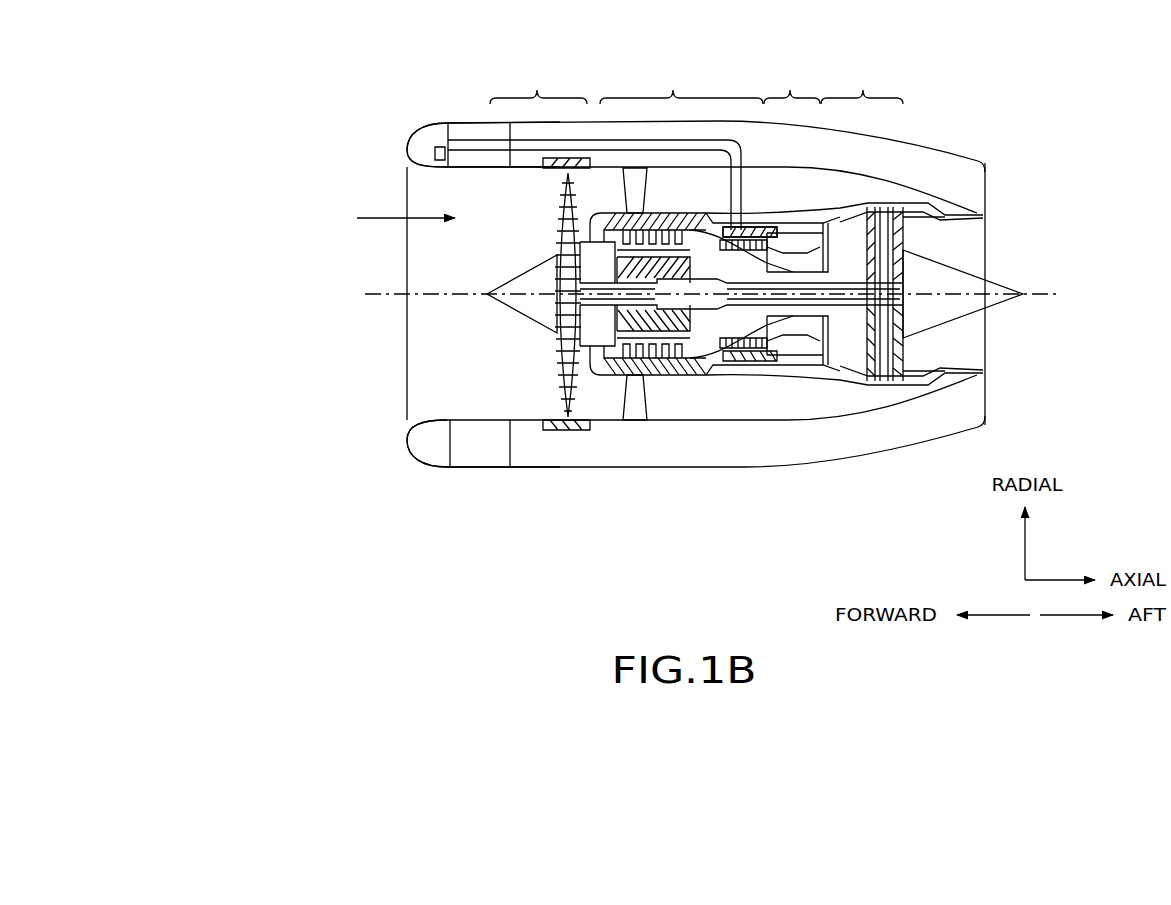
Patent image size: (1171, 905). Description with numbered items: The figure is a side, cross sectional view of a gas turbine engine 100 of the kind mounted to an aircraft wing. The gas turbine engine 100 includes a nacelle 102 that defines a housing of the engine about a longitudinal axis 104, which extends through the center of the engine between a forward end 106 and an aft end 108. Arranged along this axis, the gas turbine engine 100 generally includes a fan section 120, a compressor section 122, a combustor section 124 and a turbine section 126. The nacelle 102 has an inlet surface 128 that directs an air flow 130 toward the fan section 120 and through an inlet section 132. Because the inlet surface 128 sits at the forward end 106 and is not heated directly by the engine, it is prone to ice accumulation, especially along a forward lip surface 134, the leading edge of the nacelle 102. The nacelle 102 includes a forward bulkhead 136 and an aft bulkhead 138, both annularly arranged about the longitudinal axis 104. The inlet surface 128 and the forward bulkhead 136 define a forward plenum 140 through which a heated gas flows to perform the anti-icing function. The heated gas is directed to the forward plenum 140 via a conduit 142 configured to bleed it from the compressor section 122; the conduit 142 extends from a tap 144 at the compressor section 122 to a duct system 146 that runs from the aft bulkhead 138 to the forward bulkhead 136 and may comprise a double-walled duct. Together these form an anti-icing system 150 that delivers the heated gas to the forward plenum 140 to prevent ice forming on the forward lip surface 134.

The gas turbine engine 100 is at (997, 116).
The nacelle 102 is at (742, 469).
The longitudinal axis 104 is at (375, 296).
The forward end 106 is at (268, 211).
The aft end 108 is at (1052, 345).
The fan section 120 is at (538, 82).
The compressor section 122 is at (681, 82).
The combustor section 124 is at (792, 82).
The turbine section 126 is at (862, 82).
The inlet surface 128 is at (483, 470).
The air flow 130 is at (378, 213).
The inlet section 132 is at (518, 347).
The forward lip surface 134 is at (423, 143).
The forward bulkhead 136 is at (447, 135).
The aft bulkhead 138 is at (507, 132).
The forward plenum 140 is at (418, 152).
The conduit 142 is at (612, 143).
The tap 144 is at (746, 232).
The duct system 146 is at (466, 124).
The anti-icing system 150 is at (483, 178).